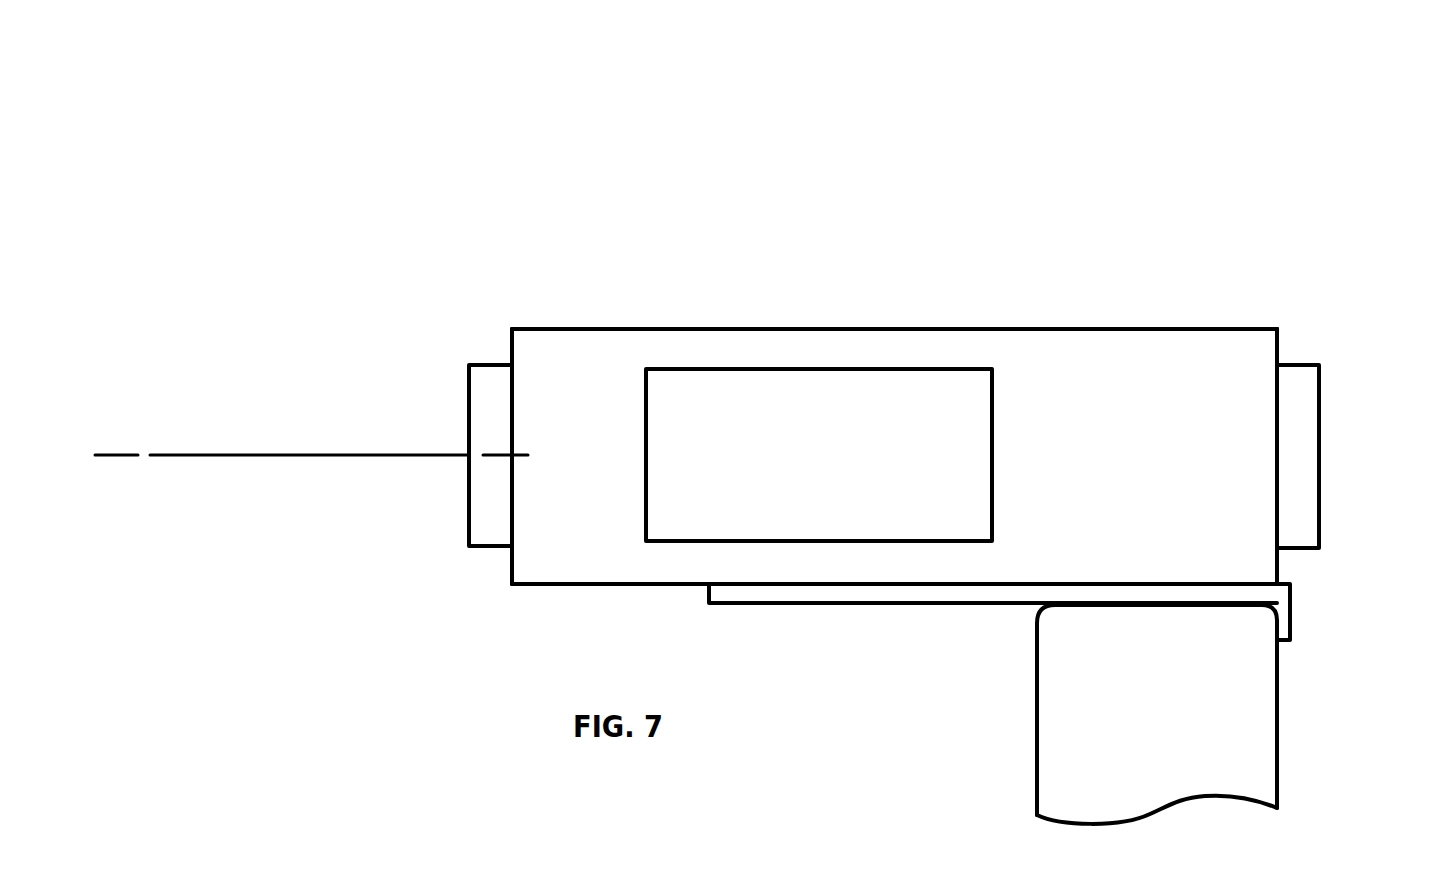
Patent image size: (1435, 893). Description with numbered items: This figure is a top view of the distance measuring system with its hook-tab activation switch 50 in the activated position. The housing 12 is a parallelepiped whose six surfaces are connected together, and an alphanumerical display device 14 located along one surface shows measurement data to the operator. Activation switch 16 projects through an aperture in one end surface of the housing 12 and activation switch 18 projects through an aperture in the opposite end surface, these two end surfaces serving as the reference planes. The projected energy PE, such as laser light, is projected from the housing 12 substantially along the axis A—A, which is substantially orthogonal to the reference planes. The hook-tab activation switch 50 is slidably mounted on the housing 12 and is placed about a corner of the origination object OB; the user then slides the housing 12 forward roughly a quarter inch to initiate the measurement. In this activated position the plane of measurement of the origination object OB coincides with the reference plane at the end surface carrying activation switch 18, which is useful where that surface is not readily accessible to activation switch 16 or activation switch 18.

The housing 12 is at (805, 329).
The alphanumerical display device 14 is at (675, 383).
The activation switch 16 is at (469, 522).
The activation switch 18 is at (1319, 461).
The hook-tab activation switch 50 is at (1290, 623).
The origination object OB is at (1062, 717).
The projected energy PE is at (240, 458).